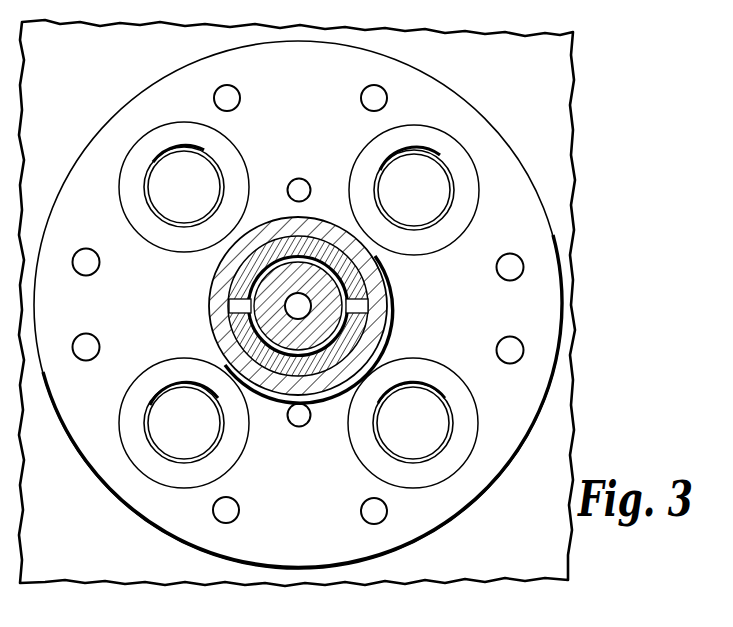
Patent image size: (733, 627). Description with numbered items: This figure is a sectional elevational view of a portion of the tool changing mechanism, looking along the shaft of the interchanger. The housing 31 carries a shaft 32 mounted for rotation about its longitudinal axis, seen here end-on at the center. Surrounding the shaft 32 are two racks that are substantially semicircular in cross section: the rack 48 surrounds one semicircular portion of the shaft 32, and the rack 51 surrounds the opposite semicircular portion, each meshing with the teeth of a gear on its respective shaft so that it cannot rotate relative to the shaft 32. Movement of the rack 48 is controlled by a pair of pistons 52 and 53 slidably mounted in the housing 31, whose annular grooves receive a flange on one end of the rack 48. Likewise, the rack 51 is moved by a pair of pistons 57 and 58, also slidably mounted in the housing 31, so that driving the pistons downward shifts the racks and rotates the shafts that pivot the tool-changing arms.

The housing 31 is at (578, 182).
The shaft 32 is at (257, 290).
The rack 48 is at (357, 325).
The rack 51 is at (358, 287).
The piston 52 is at (158, 409).
The piston 53 is at (440, 418).
The piston 57 is at (156, 184).
The piston 58 is at (446, 192).